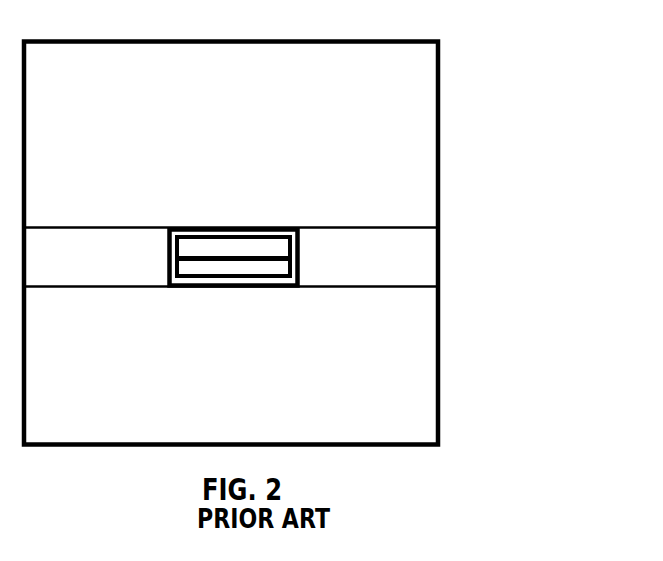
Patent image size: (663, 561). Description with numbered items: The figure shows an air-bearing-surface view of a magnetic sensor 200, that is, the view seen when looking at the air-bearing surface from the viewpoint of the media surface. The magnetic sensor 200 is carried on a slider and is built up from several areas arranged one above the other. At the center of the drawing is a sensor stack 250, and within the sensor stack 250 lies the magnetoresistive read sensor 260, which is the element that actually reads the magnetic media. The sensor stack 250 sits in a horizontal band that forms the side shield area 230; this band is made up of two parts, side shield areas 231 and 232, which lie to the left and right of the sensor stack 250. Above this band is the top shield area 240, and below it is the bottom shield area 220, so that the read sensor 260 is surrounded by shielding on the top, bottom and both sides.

The magnetic sensor 200 is at (632, 36).
The bottom shield area 220 is at (445, 288).
The side shield area 230 is at (450, 232).
The side shield area 231 is at (60, 249).
The side shield area 232 is at (382, 255).
The top shield area 240 is at (443, 42).
The sensor stack 250 is at (158, 228).
The magnetoresistive read sensor 260 is at (252, 255).